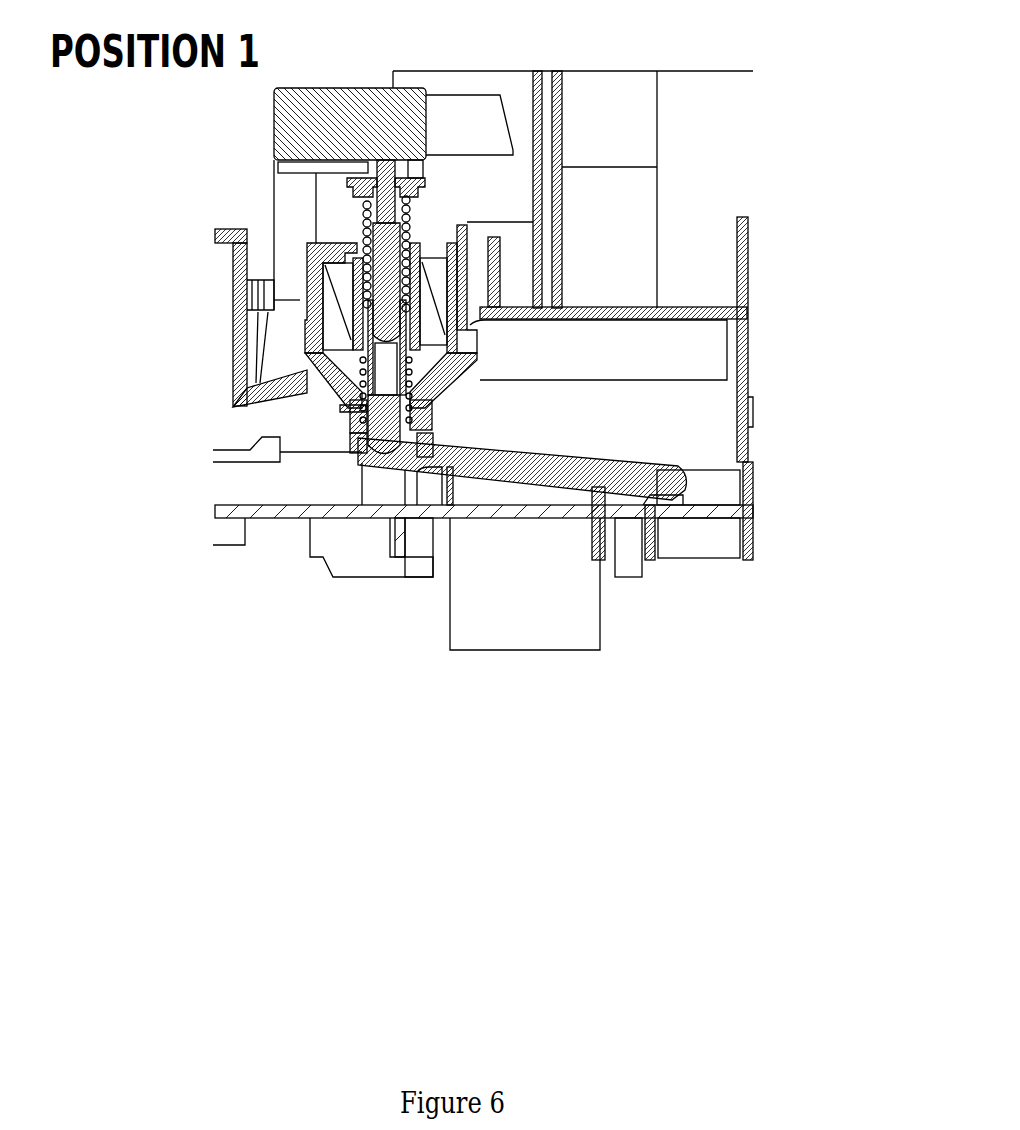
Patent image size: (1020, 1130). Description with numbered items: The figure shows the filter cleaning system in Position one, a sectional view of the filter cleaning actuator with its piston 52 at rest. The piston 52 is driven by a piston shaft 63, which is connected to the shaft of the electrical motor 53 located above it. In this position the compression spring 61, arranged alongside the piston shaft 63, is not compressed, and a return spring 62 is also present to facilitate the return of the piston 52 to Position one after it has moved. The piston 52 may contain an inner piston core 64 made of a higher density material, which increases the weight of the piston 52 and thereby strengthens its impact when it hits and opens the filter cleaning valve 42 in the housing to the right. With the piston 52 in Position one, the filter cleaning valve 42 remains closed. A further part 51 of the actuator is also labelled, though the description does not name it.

The filter cleaning valve 42 is at (617, 487).
The outer cup 51 is at (320, 342).
The piston 52 is at (320, 262).
The electrical motor 53 is at (290, 130).
The compression spring 61 is at (410, 243).
The return spring 62 is at (367, 405).
The piston shaft 63 is at (407, 178).
The inner piston core 64 is at (433, 333).